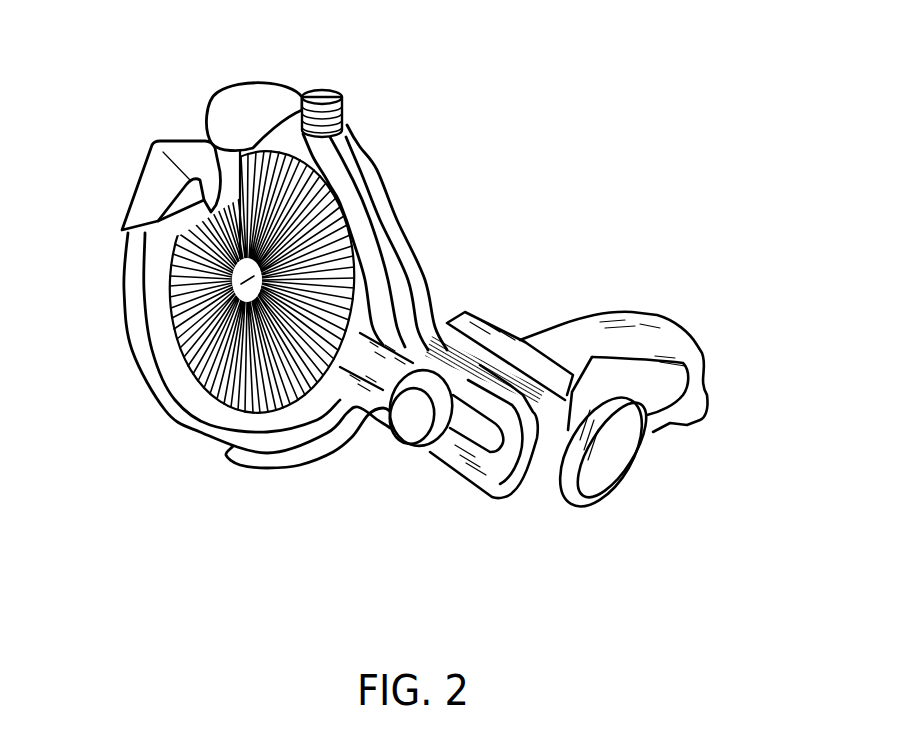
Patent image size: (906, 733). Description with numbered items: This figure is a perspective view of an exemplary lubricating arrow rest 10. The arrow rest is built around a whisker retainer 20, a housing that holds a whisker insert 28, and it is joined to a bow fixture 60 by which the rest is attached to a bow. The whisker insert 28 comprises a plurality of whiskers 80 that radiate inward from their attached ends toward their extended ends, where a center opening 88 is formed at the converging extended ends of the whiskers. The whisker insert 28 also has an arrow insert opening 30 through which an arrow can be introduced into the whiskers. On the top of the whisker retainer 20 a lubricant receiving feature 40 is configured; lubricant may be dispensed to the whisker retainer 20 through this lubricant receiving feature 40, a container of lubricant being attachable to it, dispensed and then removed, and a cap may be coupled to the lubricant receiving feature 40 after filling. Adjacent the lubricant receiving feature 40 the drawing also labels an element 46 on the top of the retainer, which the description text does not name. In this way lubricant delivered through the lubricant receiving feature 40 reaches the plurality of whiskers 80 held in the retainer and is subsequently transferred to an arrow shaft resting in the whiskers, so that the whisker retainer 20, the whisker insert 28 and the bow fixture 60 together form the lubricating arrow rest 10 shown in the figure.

The lubricating arrow rest 10 is at (370, 290).
The whisker retainer 20 is at (320, 452).
The whisker insert 28 is at (163, 260).
The arrow insert opening 30 is at (193, 128).
The lubricant receiving feature 40 is at (350, 124).
The fastener 46 is at (305, 88).
The bow fixture 60 is at (522, 325).
The whiskers 80 is at (225, 385).
The center opening 88 is at (252, 277).